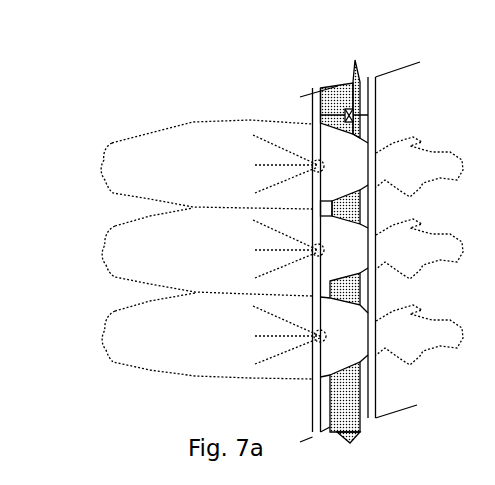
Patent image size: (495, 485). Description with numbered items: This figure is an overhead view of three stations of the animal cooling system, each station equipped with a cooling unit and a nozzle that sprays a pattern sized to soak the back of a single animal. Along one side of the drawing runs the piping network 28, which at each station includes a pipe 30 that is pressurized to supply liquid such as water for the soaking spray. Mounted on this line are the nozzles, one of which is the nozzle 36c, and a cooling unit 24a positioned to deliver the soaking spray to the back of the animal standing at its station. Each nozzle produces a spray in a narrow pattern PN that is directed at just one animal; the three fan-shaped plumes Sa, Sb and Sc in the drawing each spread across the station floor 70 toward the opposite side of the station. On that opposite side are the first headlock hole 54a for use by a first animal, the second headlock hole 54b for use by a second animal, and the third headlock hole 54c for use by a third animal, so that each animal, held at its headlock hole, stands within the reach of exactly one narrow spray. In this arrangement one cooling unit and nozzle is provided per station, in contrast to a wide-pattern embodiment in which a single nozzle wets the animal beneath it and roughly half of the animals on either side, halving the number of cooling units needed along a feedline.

The piping network 28 is at (318, 421).
The pipe 30 is at (318, 102).
The nozzle 36c is at (310, 162).
The cooling unit 24a is at (316, 338).
The first headlock hole 54a is at (379, 313).
The second headlock hole 54b is at (379, 232).
The third headlock hole 54c is at (378, 139).
The floor 70 is at (152, 411).
The narrow spray pattern PN is at (260, 322).
The stream a Sa is at (92, 330).
The stream b Sb is at (93, 235).
The stream c Sc is at (100, 152).